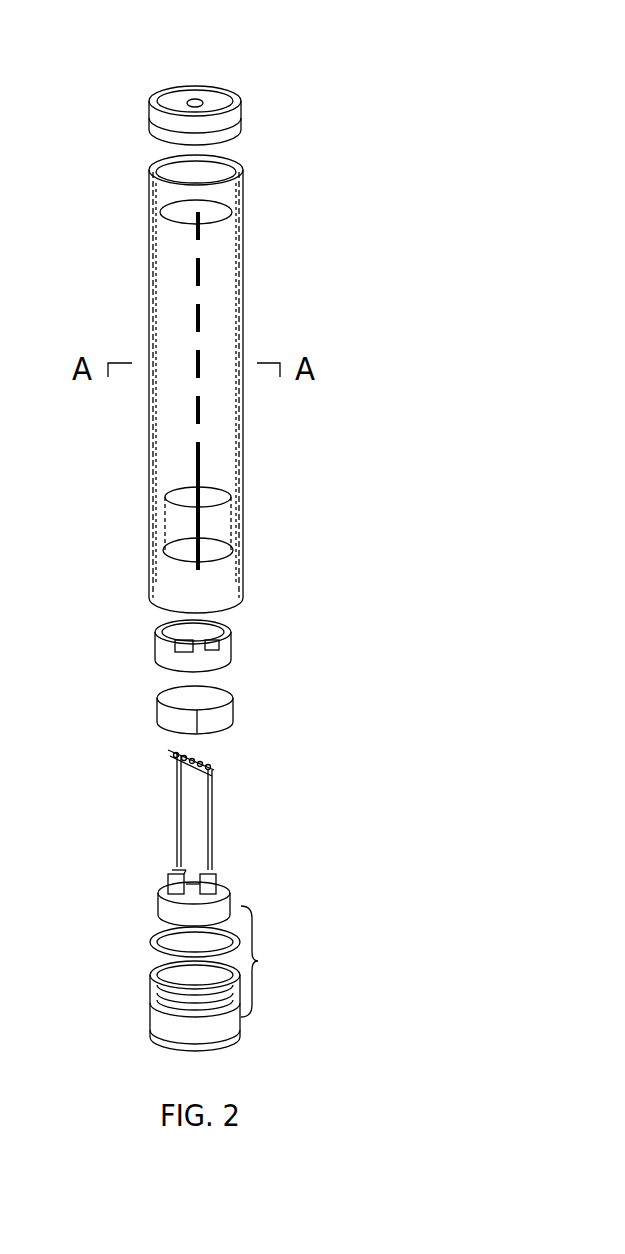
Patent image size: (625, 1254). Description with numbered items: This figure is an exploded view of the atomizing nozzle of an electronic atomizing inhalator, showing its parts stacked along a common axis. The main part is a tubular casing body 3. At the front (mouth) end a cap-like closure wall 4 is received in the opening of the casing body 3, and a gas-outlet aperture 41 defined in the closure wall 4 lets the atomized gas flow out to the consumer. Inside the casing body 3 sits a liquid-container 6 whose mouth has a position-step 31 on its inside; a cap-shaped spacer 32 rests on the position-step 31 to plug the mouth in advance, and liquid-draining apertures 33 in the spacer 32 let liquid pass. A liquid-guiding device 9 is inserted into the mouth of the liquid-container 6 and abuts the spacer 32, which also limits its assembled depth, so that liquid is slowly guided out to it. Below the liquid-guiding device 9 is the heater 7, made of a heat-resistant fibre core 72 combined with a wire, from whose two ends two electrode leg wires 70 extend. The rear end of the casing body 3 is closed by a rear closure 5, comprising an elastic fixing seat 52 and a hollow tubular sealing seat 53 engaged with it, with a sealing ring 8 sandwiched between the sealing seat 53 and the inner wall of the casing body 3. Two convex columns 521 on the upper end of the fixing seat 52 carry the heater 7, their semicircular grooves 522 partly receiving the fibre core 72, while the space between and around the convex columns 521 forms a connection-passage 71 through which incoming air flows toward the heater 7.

The casing body 3 is at (242, 384).
The closure wall 4 is at (240, 74).
The gas-outlet aperture 41 is at (158, 55).
The rear closure 5 is at (290, 951).
The liquid-container 6 is at (149, 385).
The heater 7 is at (133, 765).
The sealing ring 8 is at (147, 960).
The liquid-guiding device 9 is at (144, 673).
The position-step 31 is at (251, 470).
The spacer 32 is at (143, 621).
The liquid-draining apertures 33 is at (183, 649).
The fixing seat 52 is at (142, 873).
The sealing seat 53 is at (147, 1007).
The electrode leg wires 70 is at (261, 777).
The connection-passage 71 is at (118, 921).
The fibre core 72 is at (252, 715).
The convex columns 521 is at (270, 842).
The grooves 522 is at (130, 832).